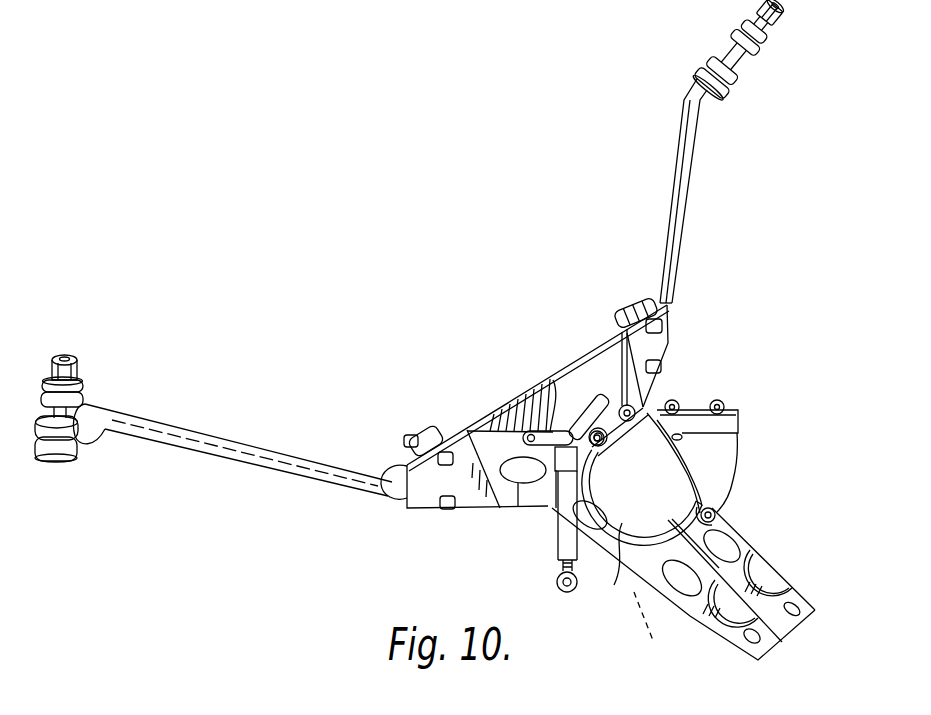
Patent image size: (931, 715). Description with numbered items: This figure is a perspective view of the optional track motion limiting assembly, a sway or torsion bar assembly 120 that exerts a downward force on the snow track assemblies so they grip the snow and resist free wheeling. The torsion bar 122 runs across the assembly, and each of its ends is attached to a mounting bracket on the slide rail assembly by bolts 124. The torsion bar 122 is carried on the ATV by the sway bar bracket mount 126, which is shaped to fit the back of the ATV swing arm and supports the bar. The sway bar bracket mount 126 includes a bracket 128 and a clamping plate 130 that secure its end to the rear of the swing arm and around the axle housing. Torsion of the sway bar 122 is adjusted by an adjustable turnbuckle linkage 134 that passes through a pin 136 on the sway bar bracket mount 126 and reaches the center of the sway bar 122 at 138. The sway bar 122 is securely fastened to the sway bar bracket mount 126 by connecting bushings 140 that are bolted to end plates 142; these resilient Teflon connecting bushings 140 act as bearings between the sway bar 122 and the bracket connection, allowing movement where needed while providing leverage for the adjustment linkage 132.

The sway or torsion bar assembly 120 is at (254, 441).
The torsion bar 122 is at (676, 179).
The bolts 124 is at (727, 52).
The sway bar bracket mount 126 is at (522, 516).
The bracket 128 is at (579, 583).
The clamping plate 130 is at (730, 467).
The adjustment linkage 132 is at (800, 588).
The turnbuckle linkage 134 is at (553, 556).
The pin 136 is at (632, 593).
The center of sway bar 138 is at (553, 373).
The connecting bushings 140 is at (608, 318).
The end plates 142 is at (663, 341).